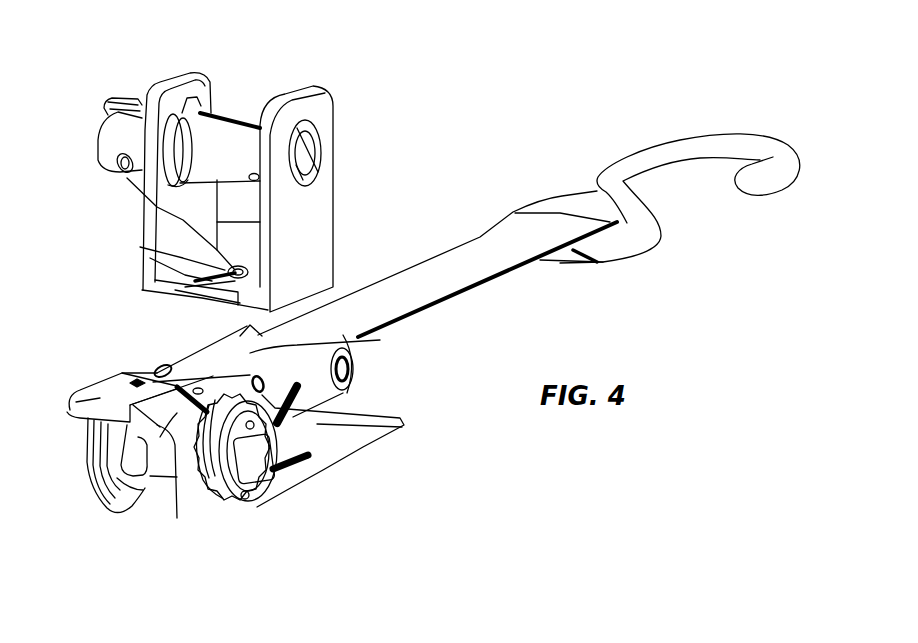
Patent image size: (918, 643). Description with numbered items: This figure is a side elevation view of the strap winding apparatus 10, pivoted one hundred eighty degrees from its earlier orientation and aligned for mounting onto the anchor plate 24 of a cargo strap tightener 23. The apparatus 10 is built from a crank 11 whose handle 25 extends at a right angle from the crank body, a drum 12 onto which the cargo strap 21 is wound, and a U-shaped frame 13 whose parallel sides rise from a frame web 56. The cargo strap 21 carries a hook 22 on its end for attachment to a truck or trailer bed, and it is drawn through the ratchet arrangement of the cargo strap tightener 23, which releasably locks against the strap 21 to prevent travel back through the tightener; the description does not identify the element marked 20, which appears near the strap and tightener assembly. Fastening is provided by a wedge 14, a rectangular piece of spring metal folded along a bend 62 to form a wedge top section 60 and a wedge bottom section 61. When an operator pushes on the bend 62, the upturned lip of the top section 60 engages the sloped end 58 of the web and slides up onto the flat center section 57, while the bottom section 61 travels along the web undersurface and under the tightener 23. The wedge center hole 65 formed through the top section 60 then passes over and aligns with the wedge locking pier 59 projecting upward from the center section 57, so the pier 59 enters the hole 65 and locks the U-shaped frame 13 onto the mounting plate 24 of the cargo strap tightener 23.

The strap winding apparatus 10 is at (357, 130).
The crank 11 is at (130, 194).
The drum 12 is at (236, 108).
The U-shaped frame 13 is at (344, 213).
The wedge 14 is at (107, 430).
The tensioning strap assembly 20 is at (411, 328).
The cargo strap 21 is at (503, 255).
The hook 22 is at (730, 133).
The cargo strap tightener 23 is at (410, 432).
The anchor plate 24 is at (357, 342).
The handle 25 is at (203, 513).
The frame web 56 is at (197, 263).
The flat center section 57 is at (175, 287).
The sloped end 58 is at (220, 298).
The wedge locking pier 59 is at (132, 191).
The wedge top section 60 is at (70, 408).
The wedge bottom section 61 is at (177, 470).
The bend 62 is at (90, 408).
The wedge center hole 65 is at (137, 382).